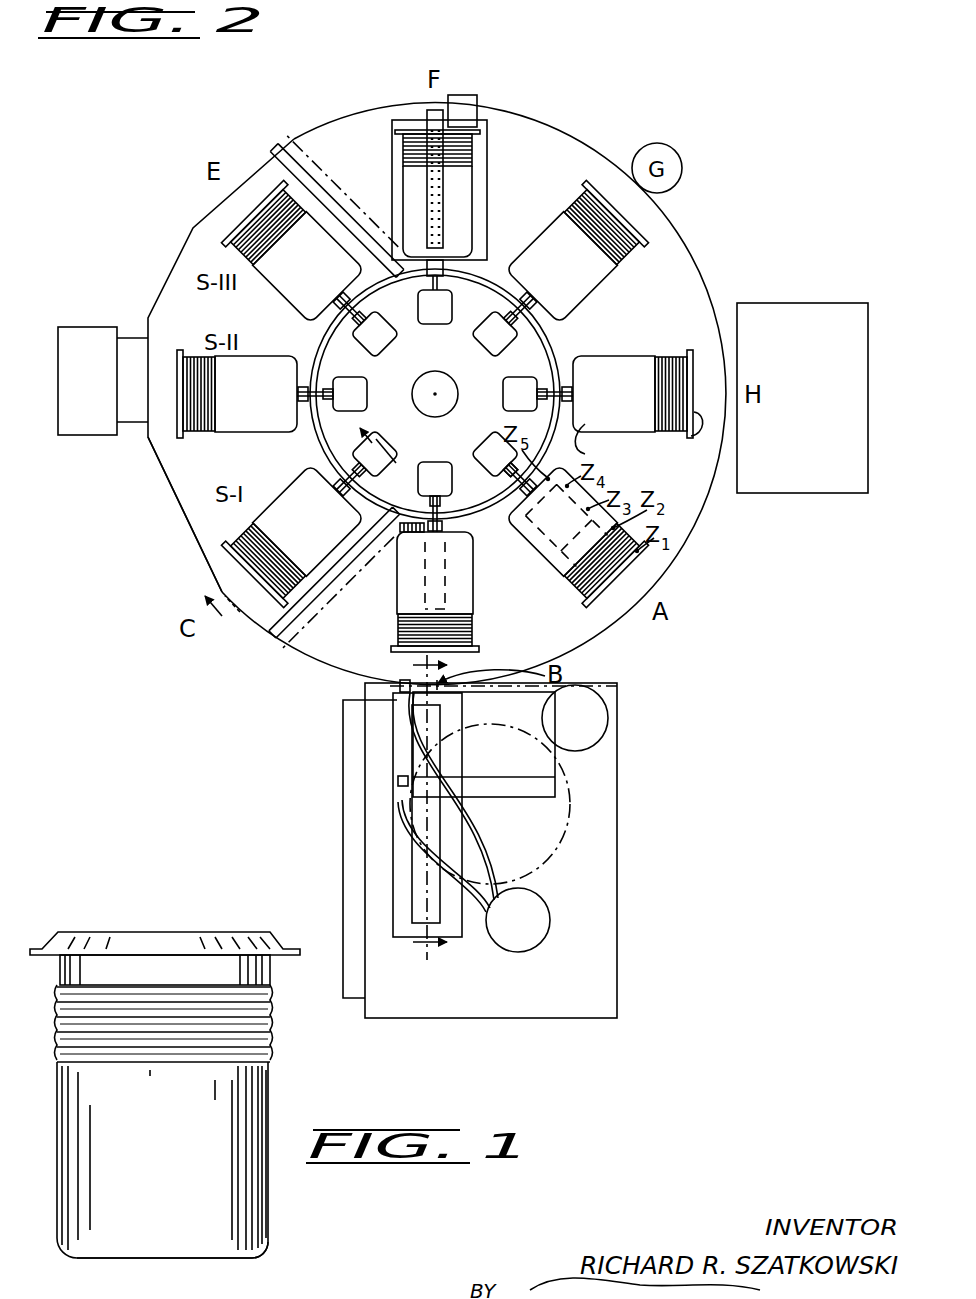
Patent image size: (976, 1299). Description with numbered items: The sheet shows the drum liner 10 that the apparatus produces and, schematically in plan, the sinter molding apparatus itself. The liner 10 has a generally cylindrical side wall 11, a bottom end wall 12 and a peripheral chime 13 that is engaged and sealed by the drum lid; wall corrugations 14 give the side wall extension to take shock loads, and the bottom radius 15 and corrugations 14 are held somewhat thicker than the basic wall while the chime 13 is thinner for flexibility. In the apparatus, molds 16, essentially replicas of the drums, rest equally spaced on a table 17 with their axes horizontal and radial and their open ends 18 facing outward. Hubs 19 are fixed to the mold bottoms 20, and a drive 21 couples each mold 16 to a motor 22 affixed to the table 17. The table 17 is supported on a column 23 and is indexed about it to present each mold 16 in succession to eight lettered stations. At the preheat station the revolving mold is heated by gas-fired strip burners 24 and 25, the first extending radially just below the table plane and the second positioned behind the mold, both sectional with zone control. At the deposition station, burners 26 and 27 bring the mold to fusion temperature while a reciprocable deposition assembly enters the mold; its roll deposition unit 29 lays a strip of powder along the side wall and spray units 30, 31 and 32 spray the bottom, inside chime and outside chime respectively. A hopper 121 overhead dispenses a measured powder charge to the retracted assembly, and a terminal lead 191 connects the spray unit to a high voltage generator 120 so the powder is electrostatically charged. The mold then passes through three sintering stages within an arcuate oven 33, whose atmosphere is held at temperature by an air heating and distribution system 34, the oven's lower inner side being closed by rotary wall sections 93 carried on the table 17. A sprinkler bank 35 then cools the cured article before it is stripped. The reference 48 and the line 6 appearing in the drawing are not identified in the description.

In FIG. 2, the drum liner 10 is at (311, 532).
In FIG. 1, the drum liner 10 is at (194, 1097).
In FIG. 1, the side wall 11 is at (240, 1214).
In FIG. 1, the bottom end wall 12 is at (160, 1259).
In FIG. 1, the peripheral chime 13 is at (138, 944).
In FIG. 1, the wall corrugations 14 is at (250, 1024).
In FIG. 1, the bottom radius 15 is at (266, 1253).
In FIG. 2, the mold 16 is at (615, 380).
In FIG. 2, the table 17 is at (680, 270).
In FIG. 2, the open end 18 is at (679, 410).
In FIG. 2, the hub 19 is at (589, 401).
In FIG. 2, the mold bottom 20 is at (587, 451).
In FIG. 2, the drive 21 is at (560, 364).
In FIG. 2, the motor 22 is at (507, 384).
In FIG. 2, the column 23 is at (438, 384).
In FIG. 2, the strip burner 24 is at (560, 569).
In FIG. 2, the strip burner 25 is at (512, 498).
In FIG. 2, the burner 26 is at (446, 606).
In FIG. 2, the burner 27 is at (404, 534).
In FIG. 2, the roll deposition unit 29 is at (418, 736).
In FIG. 2, the fluidized powder spray deposition unit 30 is at (402, 682).
In FIG. 2, the fluidized powder spray deposition unit 31 is at (397, 784).
In FIG. 2, the fluidized powder spray deposition unit 32 is at (398, 802).
In FIG. 2, the arcuate oven 33 is at (186, 492).
In FIG. 2, the air heating and distribution system 34 is at (73, 426).
In FIG. 2, the sprinkler bank 35 is at (440, 172).
In FIG. 2, the roller 48 is at (535, 910).
In FIG. 2, the wall section 93 is at (490, 276).
In FIG. 2, the high voltage generator 120 is at (598, 719).
In FIG. 2, the hopper 121 is at (556, 822).
In FIG. 2, the terminal lead 191 is at (477, 788).
In FIG. 2, the section line 6- 6 is at (424, 808).